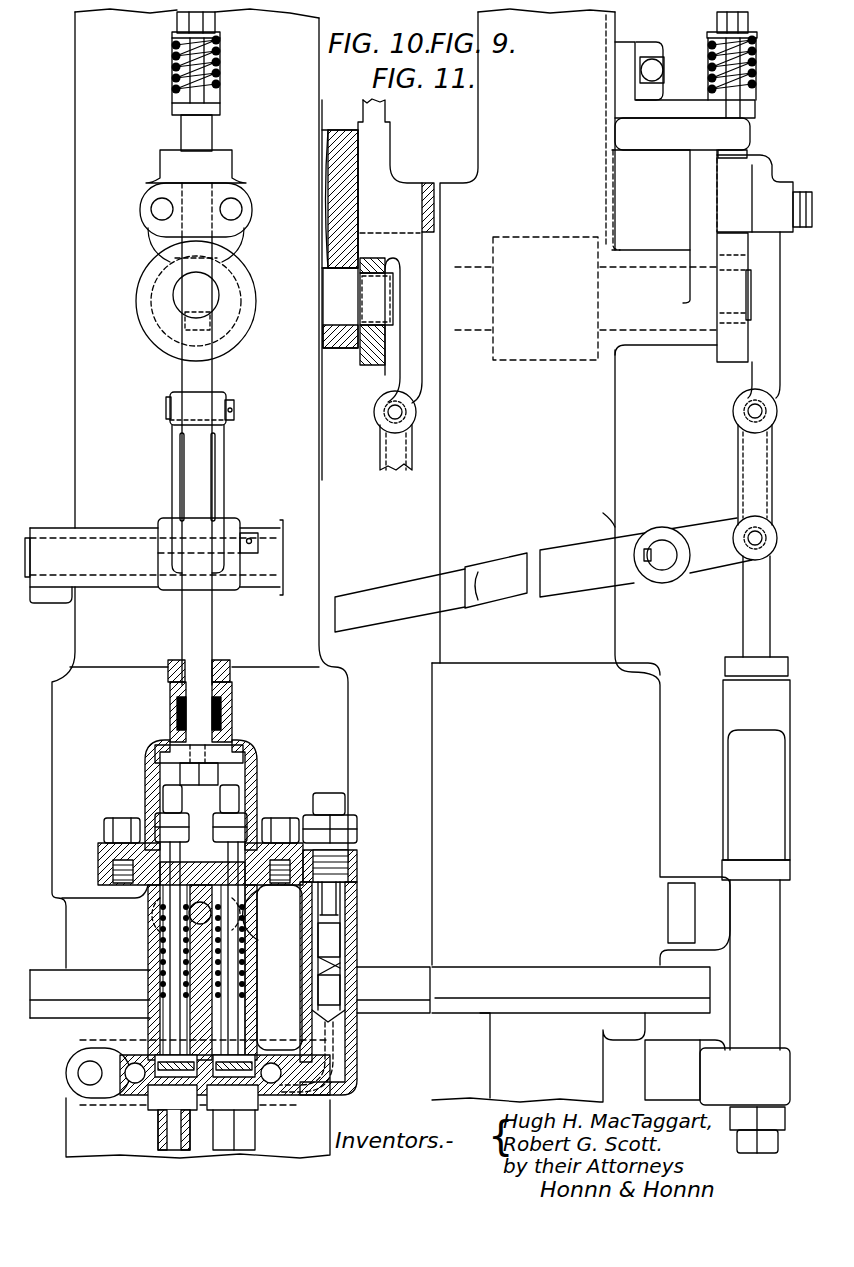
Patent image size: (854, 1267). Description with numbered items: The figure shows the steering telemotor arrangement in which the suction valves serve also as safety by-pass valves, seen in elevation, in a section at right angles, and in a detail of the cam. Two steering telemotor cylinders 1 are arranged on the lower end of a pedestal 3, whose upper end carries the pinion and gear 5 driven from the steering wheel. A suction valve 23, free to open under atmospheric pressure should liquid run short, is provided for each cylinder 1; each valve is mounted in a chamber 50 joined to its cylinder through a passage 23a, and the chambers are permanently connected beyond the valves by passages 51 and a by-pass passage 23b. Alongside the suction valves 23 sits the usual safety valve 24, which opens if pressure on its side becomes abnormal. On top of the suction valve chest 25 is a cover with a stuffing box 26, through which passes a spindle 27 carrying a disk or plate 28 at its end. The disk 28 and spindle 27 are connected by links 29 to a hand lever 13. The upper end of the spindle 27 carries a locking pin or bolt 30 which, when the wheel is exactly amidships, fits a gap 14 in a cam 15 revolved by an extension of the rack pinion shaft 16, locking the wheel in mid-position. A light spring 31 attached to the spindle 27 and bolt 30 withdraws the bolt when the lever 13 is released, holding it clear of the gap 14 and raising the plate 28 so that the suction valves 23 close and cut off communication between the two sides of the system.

In FIG. 10, the steering telemotor cylinder 1 is at (230, 1007).
In FIG. 11, the steering telemotor cylinder 1 is at (571, 1018).
In FIG. 10, the pedestal 3 is at (200, 488).
In FIG. 11, the pedestal 3 is at (581, 555).
In FIG. 11, the pinion and gear 5 is at (565, 238).
In FIG. 10, the hand lever 13 is at (58, 590).
In FIG. 11, the hand lever 13 is at (543, 572).
In FIG. 10, the gap 14 is at (183, 258).
In FIG. 9, the gap 14 is at (385, 258).
In FIG. 11, the gap 14 is at (734, 297).
In FIG. 10, the cam 15 is at (148, 298).
In FIG. 9, the cam 15 is at (368, 358).
In FIG. 11, the cam 15 is at (732, 306).
In FIG. 10, the rack pinion shaft 16 is at (222, 303).
In FIG. 9, the rack pinion shaft 16 is at (340, 290).
In FIG. 11, the rack pinion shaft 16 is at (584, 298).
In FIG. 10, the suction valve 23 is at (175, 1076).
In FIG. 10, the passage 23a is at (132, 1068).
In FIG. 10, the by-pass passage 23b is at (193, 916).
In FIG. 10, the safety valve 24 is at (340, 1022).
In FIG. 10, the suction valve chest 25 is at (150, 935).
In FIG. 11, the suction valve chest 25 is at (745, 1006).
In FIG. 10, the stuffing box 26 is at (233, 714).
In FIG. 11, the stuffing box 26 is at (735, 676).
In FIG. 10, the spindle 27 is at (205, 632).
In FIG. 11, the spindle 27 is at (748, 604).
In FIG. 10, the disk or plate 28 is at (240, 757).
In FIG. 10, the links 29 is at (220, 488).
In FIG. 9, the links 29 is at (388, 420).
In FIG. 11, the links 29 is at (745, 438).
In FIG. 10, the locking pin or bolt 30 is at (212, 243).
In FIG. 9, the locking pin or bolt 30 is at (383, 238).
In FIG. 11, the locking pin or bolt 30 is at (712, 172).
In FIG. 10, the spring 31 is at (222, 68).
In FIG. 11, the spring 31 is at (757, 68).
In FIG. 10, the chamber 50 is at (160, 1138).
In FIG. 10, the passages 51 is at (172, 1008).